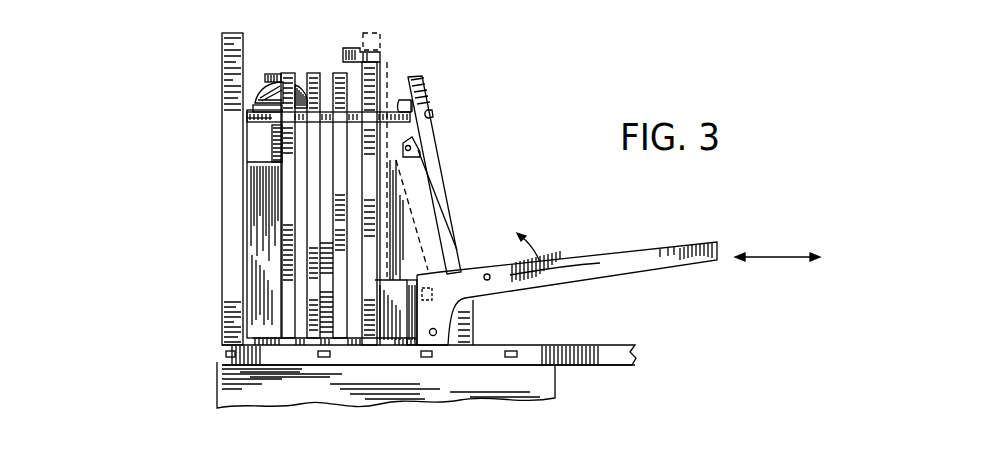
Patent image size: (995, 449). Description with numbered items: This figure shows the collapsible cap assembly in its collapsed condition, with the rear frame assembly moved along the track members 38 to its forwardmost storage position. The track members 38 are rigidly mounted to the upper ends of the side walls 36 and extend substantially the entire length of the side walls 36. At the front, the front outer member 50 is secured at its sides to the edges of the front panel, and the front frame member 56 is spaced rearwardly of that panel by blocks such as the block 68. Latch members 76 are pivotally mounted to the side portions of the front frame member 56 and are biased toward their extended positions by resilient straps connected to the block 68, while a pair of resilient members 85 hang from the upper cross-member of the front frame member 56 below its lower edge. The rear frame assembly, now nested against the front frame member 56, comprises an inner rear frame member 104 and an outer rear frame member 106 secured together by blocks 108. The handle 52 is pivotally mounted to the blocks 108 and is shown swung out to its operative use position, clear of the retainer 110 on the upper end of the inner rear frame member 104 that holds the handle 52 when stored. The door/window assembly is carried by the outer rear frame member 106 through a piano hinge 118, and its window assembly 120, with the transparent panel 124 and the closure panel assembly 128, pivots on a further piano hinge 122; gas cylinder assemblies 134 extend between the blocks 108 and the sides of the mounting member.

The side walls 36 is at (218, 373).
The track members 38 is at (602, 347).
The front outer member 50 is at (222, 95).
The handle 52 is at (384, 45).
The front frame member 56 is at (287, 73).
The block 68 is at (267, 215).
The latch members 76 is at (269, 136).
The resilient members 85 is at (298, 95).
The inner rear frame member 104 is at (381, 84).
The outer rear frame member 106 is at (427, 81).
The blocks 108 is at (398, 193).
The retainer 110 is at (352, 47).
The piano hinge 118 is at (440, 118).
The window assembly 120 is at (327, 81).
The piano hinge 122 is at (434, 104).
The transparent panel 124 is at (256, 121).
The closure panel assembly 128 is at (252, 97).
The gas cylinder assemblies 134 is at (423, 166).